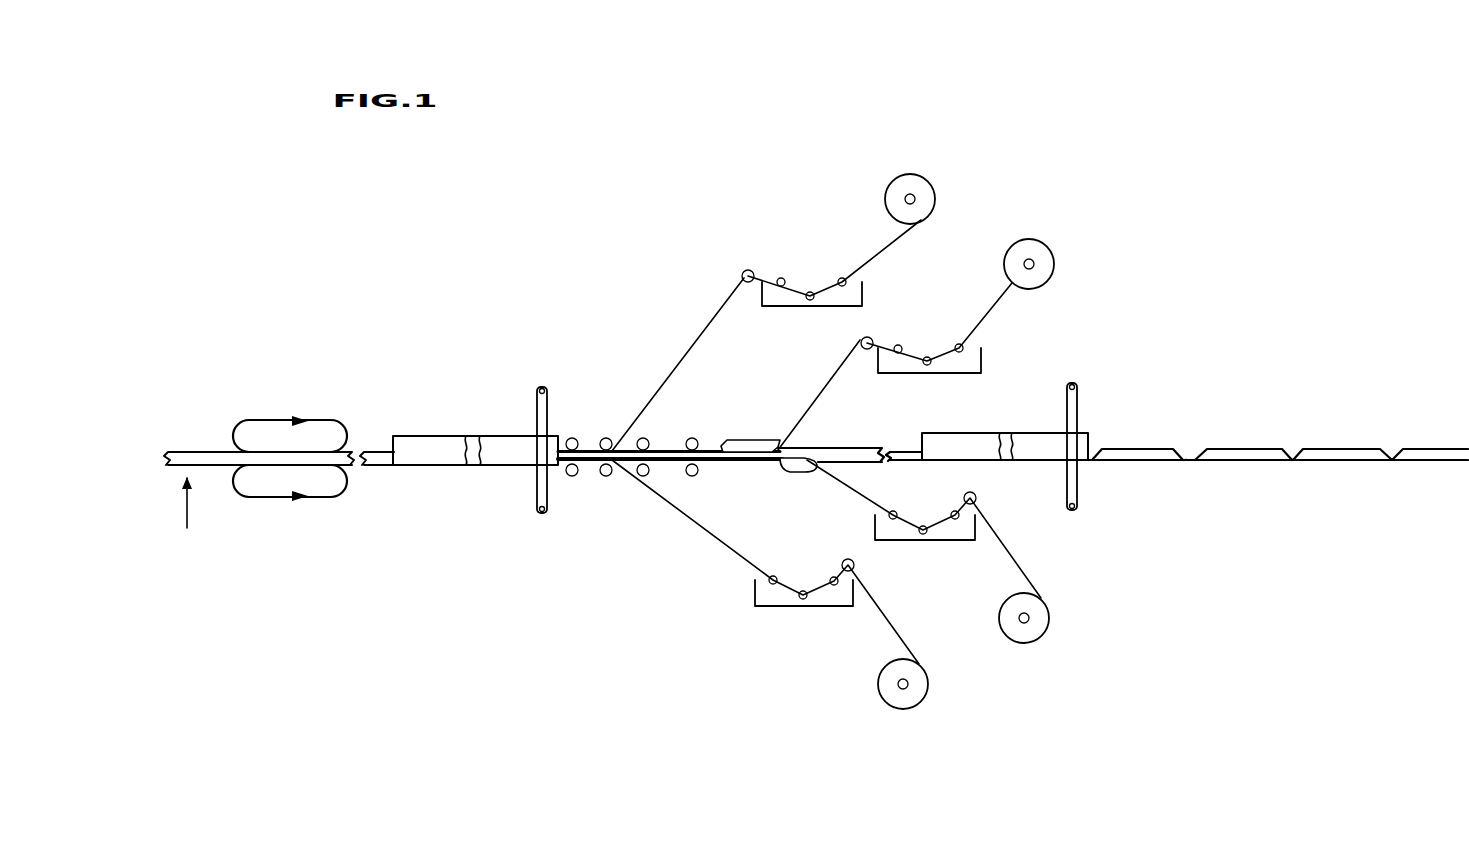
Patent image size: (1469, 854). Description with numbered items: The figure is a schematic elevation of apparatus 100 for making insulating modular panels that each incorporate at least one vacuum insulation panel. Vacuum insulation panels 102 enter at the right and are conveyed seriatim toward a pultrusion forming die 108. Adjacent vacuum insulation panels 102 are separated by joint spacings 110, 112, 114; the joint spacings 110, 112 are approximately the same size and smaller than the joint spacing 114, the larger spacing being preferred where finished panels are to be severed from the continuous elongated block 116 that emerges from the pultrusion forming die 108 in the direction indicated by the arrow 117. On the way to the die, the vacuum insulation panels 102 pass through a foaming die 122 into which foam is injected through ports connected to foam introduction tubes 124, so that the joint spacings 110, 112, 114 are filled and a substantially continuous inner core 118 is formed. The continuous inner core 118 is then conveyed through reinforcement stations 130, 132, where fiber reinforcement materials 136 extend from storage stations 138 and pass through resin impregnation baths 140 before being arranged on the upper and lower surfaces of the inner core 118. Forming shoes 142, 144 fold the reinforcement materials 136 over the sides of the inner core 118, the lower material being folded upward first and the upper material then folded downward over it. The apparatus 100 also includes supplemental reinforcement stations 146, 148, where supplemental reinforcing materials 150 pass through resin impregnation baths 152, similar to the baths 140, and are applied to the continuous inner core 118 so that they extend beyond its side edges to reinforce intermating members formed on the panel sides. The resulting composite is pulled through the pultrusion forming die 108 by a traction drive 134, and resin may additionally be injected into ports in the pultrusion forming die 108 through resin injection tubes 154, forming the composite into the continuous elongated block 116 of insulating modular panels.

The apparatus 100 is at (1190, 250).
The vacuum insulation panels 102 is at (1240, 450).
The pultrusion forming die 108 is at (503, 466).
The joint spacing 110 is at (1390, 467).
The joint spacing 112 is at (1295, 467).
The joint spacing 114 is at (1190, 467).
The continuous elongated block 116 is at (208, 465).
The arrow 117 is at (187, 531).
The continuous inner core 118 is at (853, 447).
The foaming die 122 is at (1038, 462).
The foam introduction tubes 124 is at (1079, 395).
The reinforcement station 130 is at (958, 288).
The reinforcement station 132 is at (969, 594).
The traction drive 134 is at (323, 423).
The fiber reinforcement materials 136 is at (991, 311).
The storage stations 138 is at (1048, 248).
The resin impregnation baths 140 is at (893, 374).
The forming shoe 142 is at (797, 472).
The forming shoe 144 is at (752, 440).
The supplemental reinforcement station 146 is at (768, 305).
The supplemental reinforcement station 148 is at (770, 584).
The supplemental reinforcing materials 150 is at (691, 346).
The resin impregnation baths 152 is at (785, 307).
The resin injection tubes 154 is at (535, 402).